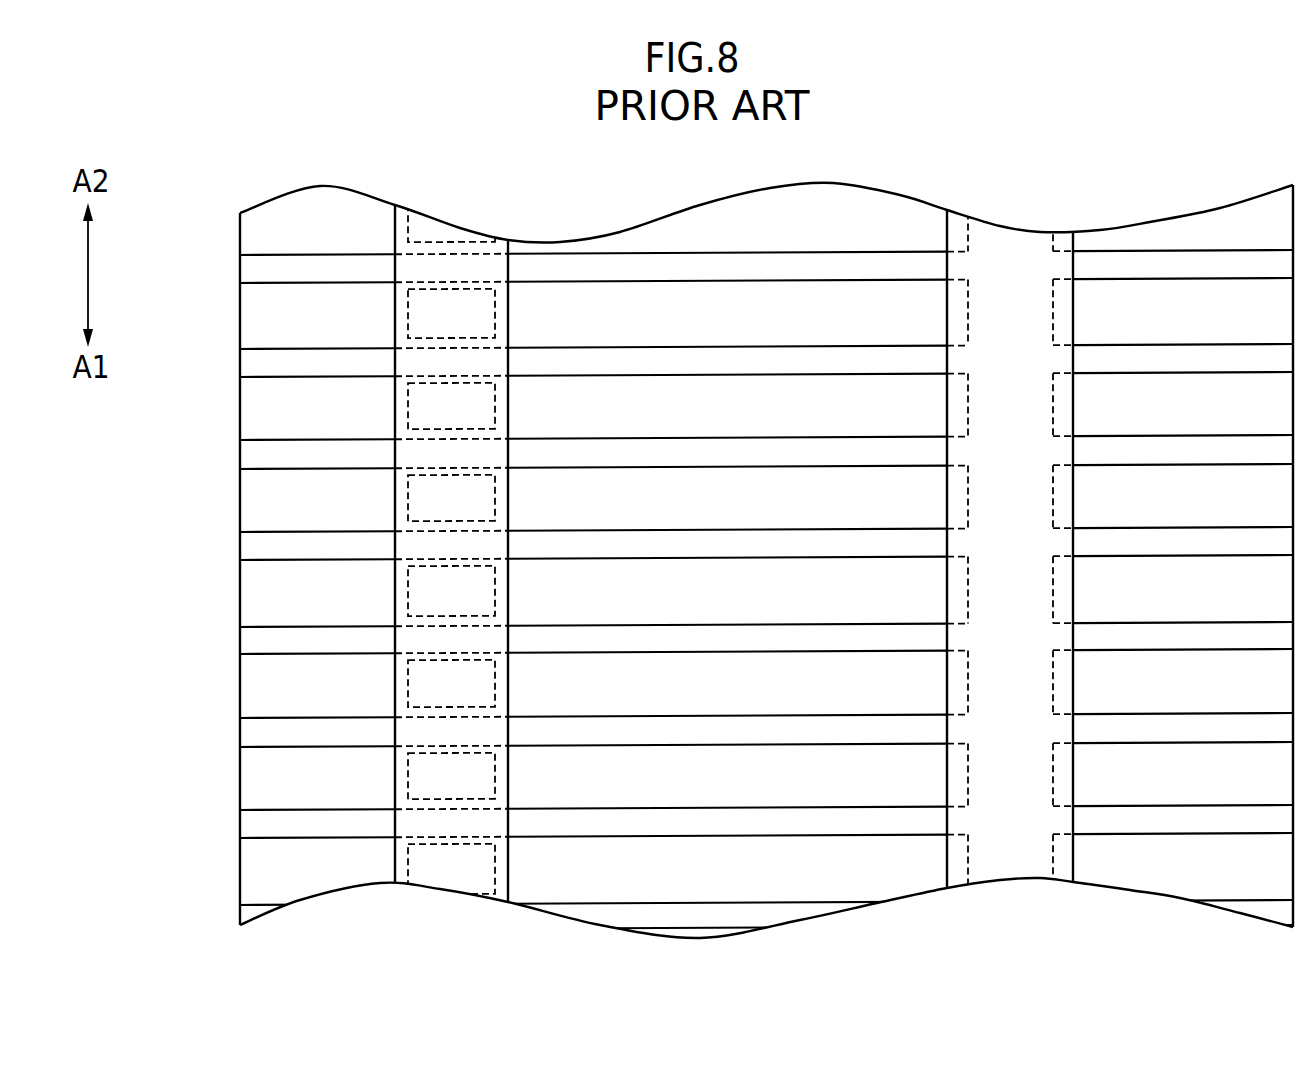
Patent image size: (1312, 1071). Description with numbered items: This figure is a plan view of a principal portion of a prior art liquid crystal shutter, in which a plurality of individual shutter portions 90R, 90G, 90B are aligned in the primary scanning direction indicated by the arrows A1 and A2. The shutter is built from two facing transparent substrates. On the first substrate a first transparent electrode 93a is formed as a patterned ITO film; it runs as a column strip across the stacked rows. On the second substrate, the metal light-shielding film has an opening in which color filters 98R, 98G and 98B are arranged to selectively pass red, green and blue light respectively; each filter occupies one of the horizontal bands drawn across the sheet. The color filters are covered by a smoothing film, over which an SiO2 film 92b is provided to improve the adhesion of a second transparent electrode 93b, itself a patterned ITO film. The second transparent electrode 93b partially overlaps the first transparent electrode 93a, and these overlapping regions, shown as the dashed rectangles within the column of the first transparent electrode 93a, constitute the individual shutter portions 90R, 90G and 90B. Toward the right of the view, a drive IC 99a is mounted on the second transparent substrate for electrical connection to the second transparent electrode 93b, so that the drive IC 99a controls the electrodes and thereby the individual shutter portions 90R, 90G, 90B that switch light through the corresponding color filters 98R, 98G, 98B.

The individual shutter portion 90R is at (408, 311).
The individual shutter portion 90G is at (408, 404).
The individual shutter portion 90B is at (408, 496).
The color filter 98R is at (472, 312).
The color filter 98G is at (472, 405).
The color filter 98B is at (472, 497).
The first transparent electrode 93a is at (428, 227).
The second transparent electrode 93b is at (260, 397).
The SiO2 film 92b is at (248, 457).
The drive IC 99a is at (1014, 251).